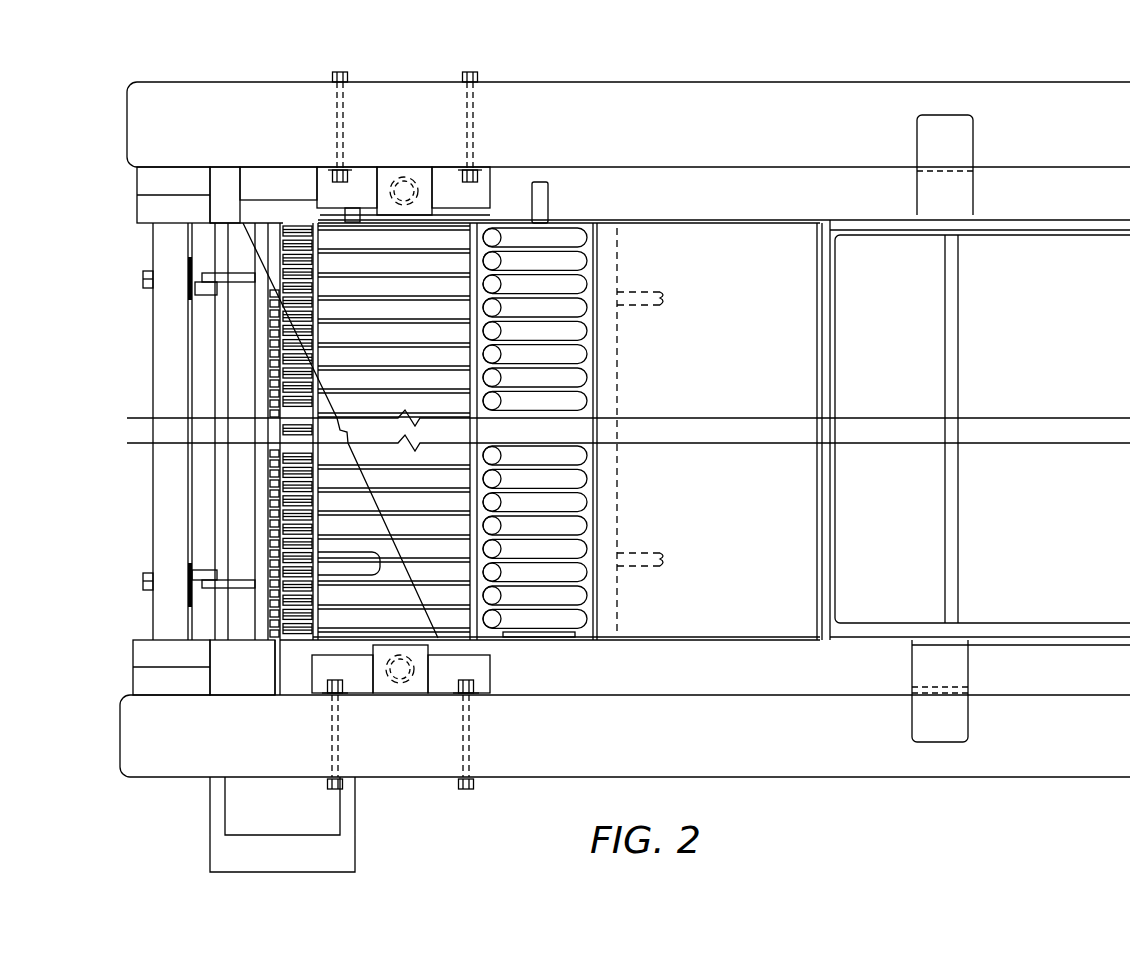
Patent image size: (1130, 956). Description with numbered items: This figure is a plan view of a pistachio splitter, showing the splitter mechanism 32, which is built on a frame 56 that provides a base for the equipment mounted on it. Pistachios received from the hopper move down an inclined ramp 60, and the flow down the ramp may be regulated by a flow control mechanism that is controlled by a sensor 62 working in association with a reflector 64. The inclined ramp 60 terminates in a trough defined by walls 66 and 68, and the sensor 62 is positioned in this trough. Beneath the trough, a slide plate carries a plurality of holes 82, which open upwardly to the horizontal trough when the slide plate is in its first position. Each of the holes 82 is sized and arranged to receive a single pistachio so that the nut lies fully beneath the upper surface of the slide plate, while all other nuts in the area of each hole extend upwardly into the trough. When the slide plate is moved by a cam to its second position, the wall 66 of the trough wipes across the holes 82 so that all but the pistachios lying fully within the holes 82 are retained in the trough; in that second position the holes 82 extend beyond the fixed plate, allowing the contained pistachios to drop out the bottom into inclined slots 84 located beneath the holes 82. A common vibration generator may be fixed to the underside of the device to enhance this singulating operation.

The splitter mechanism 32 is at (737, 67).
The frame 56 is at (873, 95).
The inclined ramp 60 is at (740, 353).
The sensor 62 is at (550, 200).
The reflector 64 is at (543, 633).
The wall 66 is at (590, 262).
The wall 68 is at (477, 238).
The holes 82 is at (500, 262).
The inclined slots 84 is at (408, 547).